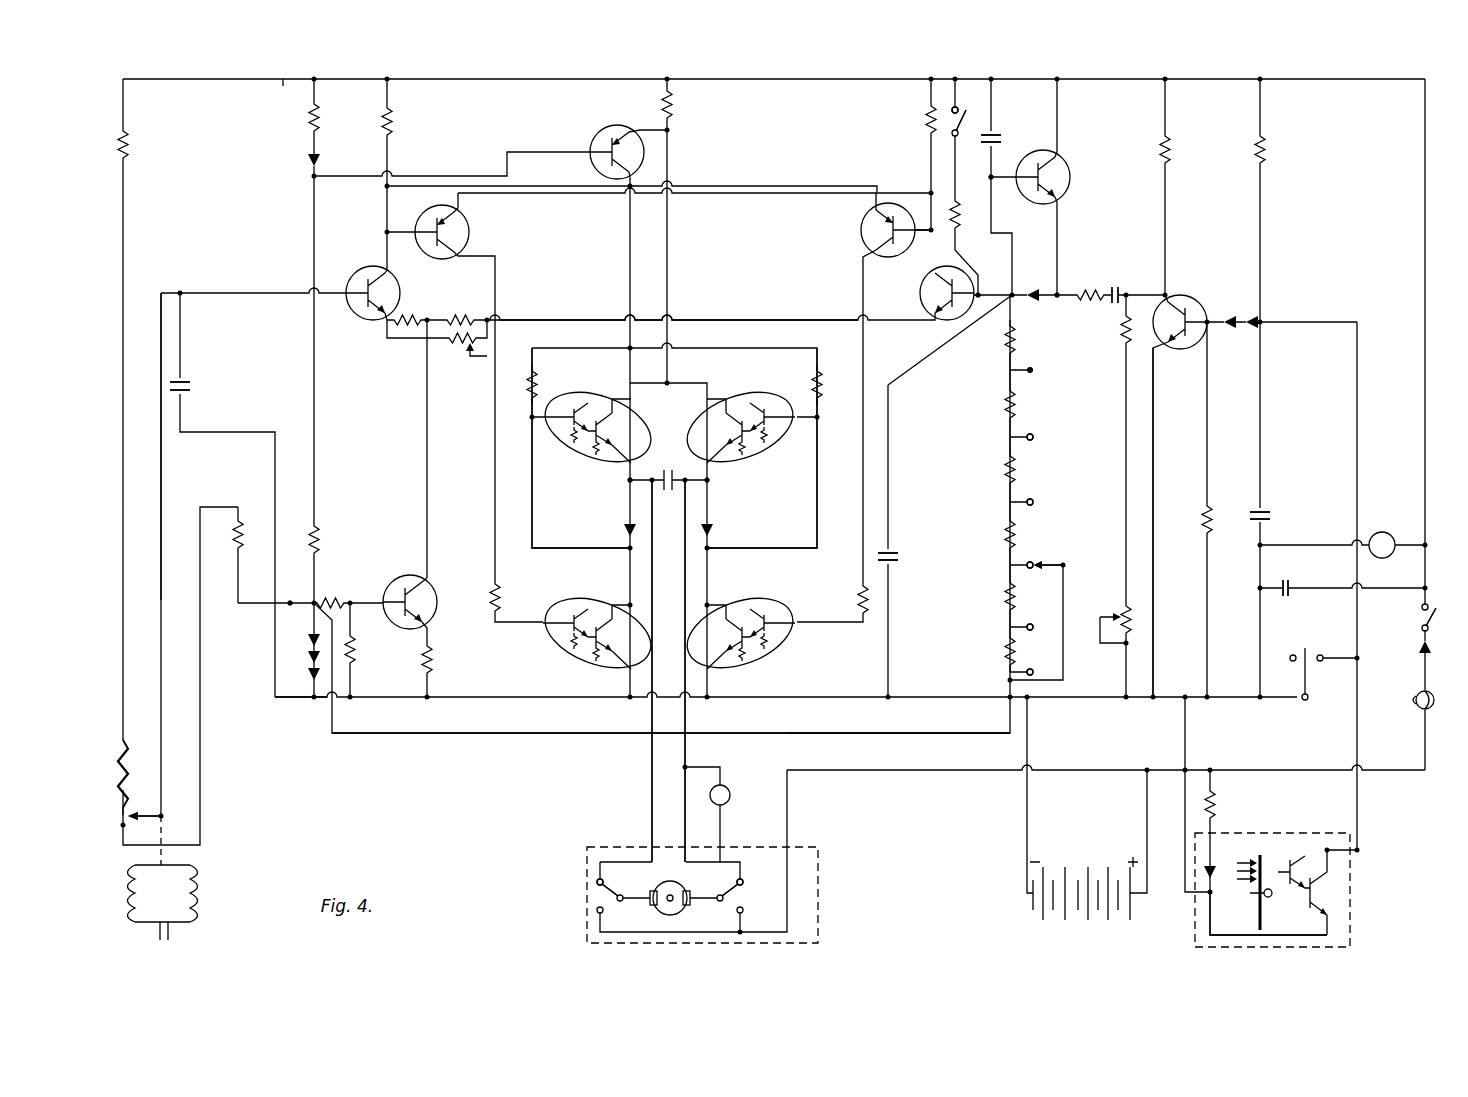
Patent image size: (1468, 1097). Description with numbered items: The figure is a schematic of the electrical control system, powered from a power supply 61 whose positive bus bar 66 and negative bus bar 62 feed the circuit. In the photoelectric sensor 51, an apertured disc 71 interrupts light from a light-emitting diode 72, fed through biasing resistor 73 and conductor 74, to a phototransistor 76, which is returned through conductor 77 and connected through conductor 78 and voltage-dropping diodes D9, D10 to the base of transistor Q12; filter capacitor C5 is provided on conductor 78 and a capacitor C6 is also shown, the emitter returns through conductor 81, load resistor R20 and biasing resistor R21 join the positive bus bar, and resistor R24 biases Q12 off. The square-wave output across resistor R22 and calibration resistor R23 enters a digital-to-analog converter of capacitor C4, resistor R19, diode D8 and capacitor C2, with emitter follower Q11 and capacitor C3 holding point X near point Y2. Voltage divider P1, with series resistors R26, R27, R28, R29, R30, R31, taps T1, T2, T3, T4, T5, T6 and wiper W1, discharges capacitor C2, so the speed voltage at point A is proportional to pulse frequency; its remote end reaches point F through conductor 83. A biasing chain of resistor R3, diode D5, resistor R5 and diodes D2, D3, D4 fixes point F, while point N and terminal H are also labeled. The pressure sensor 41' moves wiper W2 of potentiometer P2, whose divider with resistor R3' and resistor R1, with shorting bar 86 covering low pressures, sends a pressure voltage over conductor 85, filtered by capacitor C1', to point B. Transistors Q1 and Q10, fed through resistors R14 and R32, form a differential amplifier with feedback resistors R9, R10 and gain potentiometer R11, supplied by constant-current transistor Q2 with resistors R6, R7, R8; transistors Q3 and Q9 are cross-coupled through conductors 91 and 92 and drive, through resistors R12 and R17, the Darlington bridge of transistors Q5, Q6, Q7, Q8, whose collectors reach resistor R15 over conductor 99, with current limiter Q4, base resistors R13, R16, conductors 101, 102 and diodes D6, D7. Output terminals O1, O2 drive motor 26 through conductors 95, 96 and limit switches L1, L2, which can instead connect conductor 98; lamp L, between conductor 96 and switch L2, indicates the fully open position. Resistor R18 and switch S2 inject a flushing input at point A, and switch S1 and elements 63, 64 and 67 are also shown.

The positive bus bar 66 is at (1103, 64).
The terminal H is at (283, 84).
The resistor R3' is at (143, 141).
The resistor R3 is at (333, 118).
The diode D5 is at (322, 164).
The resistor R14 is at (392, 125).
The transistor Q4 is at (616, 125).
The resistor R15 is at (672, 110).
The conductor 92 is at (712, 186).
The conductor 91 is at (700, 193).
The resistor R32 is at (928, 118).
The switch S2 is at (962, 130).
The capacitor C3 is at (991, 135).
The transistor Q11 is at (1075, 178).
The load resistor R20 is at (1172, 153).
The resistor R21 is at (1267, 153).
The junction Y2 is at (989, 177).
The point B is at (296, 290).
The transistor Q3 is at (470, 232).
The transistor Q1 is at (405, 286).
The resistor R9 is at (408, 320).
The resistor R10 is at (456, 320).
The gain adjusting potentiometer R11 is at (460, 345).
The conductor 99 is at (678, 297).
The transistor Q9 is at (862, 232).
The transistor Q10 is at (921, 280).
The point A is at (992, 290).
The resistor R18 is at (960, 195).
The diode D8 is at (1033, 290).
The resistance R19 is at (1090, 290).
The capacitor C4 is at (1116, 289).
The point X is at (1060, 298).
The transistor Q12 is at (1182, 296).
The voltage-dropping diode D9 is at (1233, 316).
The voltage-dropping diode D10 is at (1252, 316).
The capacitor C1' is at (198, 370).
The conductor 85 is at (160, 446).
The resistor R13 is at (536, 380).
The resistor R16 is at (820, 378).
The conductor 101 is at (532, 513).
The conductor 102 is at (817, 503).
The Darlington pair transistor Q5 is at (589, 453).
The Darlington pair transistor Q6 is at (764, 452).
The output terminal O1 is at (627, 478).
The output terminal O2 is at (712, 478).
The diode D6 is at (622, 525).
The diode D7 is at (715, 527).
The resistor R12 is at (499, 595).
The resistor R17 is at (862, 600).
The Darlington pair transistor Q8 is at (576, 655).
The Darlington pair transistor Q7 is at (765, 655).
The capacitor C2 is at (895, 553).
The resistor R26 is at (1005, 340).
The tap T6 is at (1033, 370).
The resistor R22 is at (1122, 345).
The resistor R27 is at (1003, 405).
The tap T5 is at (1032, 437).
The resistor R28 is at (1003, 470).
The potentiometer P1 is at (1026, 481).
The tap T4 is at (1035, 502).
The resistor R29 is at (1003, 535).
The tap T3 is at (1032, 562).
The selector wiper W1 is at (1063, 565).
The resistor R30 is at (1003, 597).
The tap T2 is at (1033, 626).
The resistor R31 is at (1003, 652).
The tap T1 is at (1033, 671).
The calibration resistor R23 is at (1130, 608).
The conductor 81 is at (1153, 490).
The resistor R24 is at (1205, 522).
The conductor 78 is at (1357, 372).
The filter capacitor C5 is at (1262, 508).
The capacitor C6 is at (1290, 578).
The indicator 67 is at (1388, 532).
The switch S1 is at (1436, 616).
The diode 64 is at (1416, 642).
The lamp 63 is at (1414, 695).
The resistor R1 is at (242, 532).
The resistor R5 is at (316, 530).
The point F is at (292, 600).
The resistor R6 is at (331, 600).
The transistor Q2 is at (440, 596).
The diode D2 is at (312, 638).
The diode D3 is at (312, 656).
The diode D4 is at (312, 673).
The resistor R7 is at (355, 656).
The resistor R8 is at (432, 661).
The common line N is at (298, 700).
The negative bus bar 62 is at (953, 730).
The conductor 83 is at (886, 735).
The conductor 95 is at (652, 758).
The conductor 96 is at (688, 752).
The lamp L is at (722, 786).
The conductor 98 is at (845, 771).
The conductor 74 is at (1185, 746).
The battery 61 is at (1062, 878).
The current biasing resistor 73 is at (1215, 808).
The optical switch unit 51 is at (1349, 900).
The phototransistor 76 is at (1305, 850).
The light-emitting diode 72 is at (1216, 870).
The apertured disc 71 is at (1262, 925).
The conductor 77 is at (1200, 938).
The potentiometer P2 is at (130, 740).
The shorting bar 86 is at (126, 790).
The wiper W2 is at (148, 815).
The bellows 41' is at (180, 899).
The reversible D-C motor actuator 26 is at (665, 880).
The limit switch L1 is at (590, 878).
The limit switch L2 is at (745, 878).